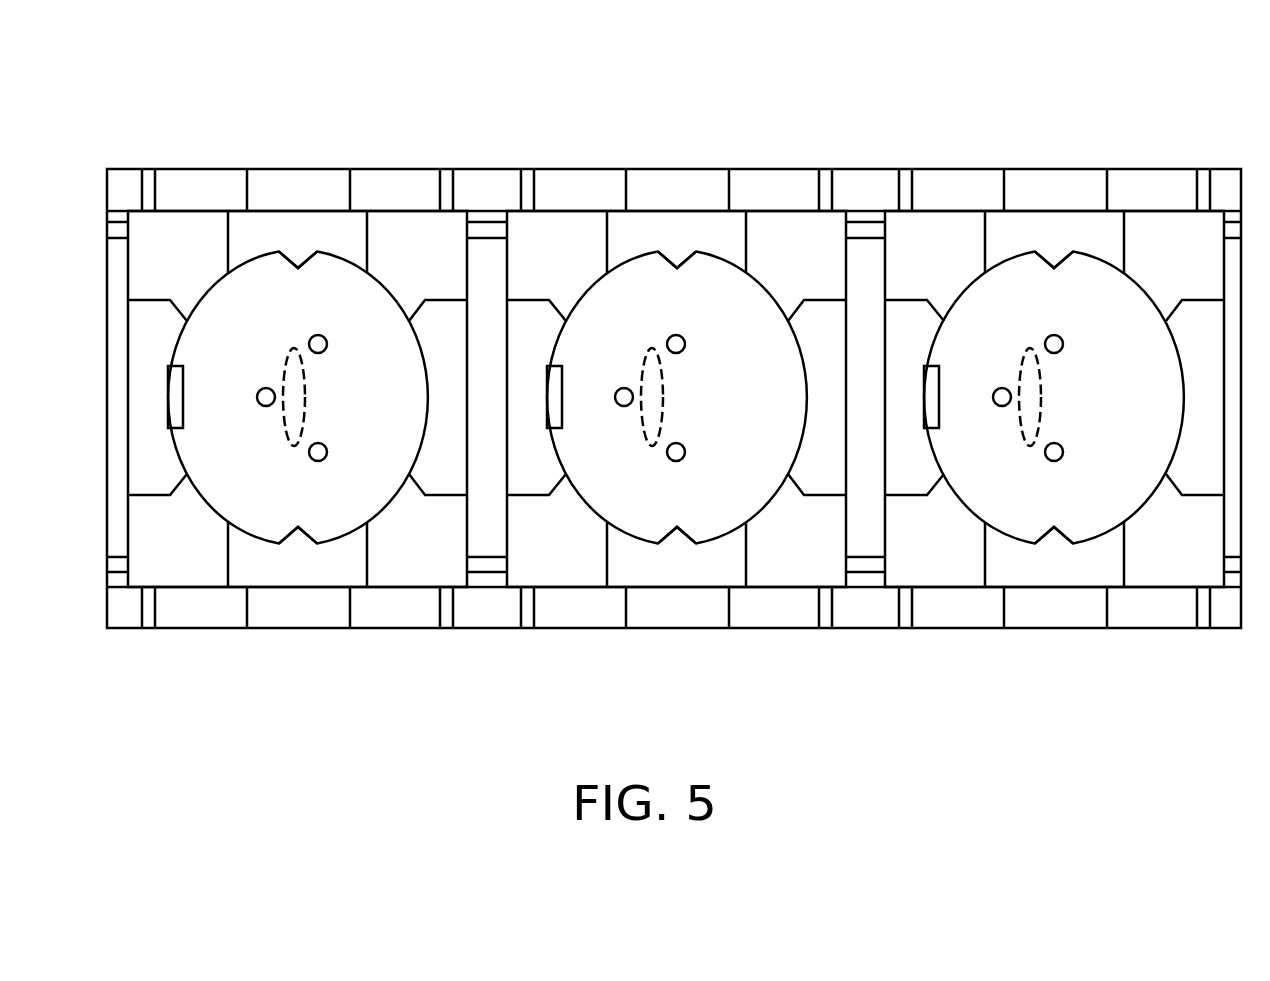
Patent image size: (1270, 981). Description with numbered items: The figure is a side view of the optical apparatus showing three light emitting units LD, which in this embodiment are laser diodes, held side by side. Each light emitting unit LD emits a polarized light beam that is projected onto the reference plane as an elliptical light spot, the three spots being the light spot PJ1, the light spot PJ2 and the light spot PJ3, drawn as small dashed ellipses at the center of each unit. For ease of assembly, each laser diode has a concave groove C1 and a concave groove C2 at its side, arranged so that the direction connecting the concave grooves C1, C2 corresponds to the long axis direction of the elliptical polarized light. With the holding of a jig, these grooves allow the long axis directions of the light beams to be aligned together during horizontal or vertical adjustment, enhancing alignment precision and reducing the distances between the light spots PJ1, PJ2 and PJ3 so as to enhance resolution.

The light emitting unit LD is at (978, 273).
The concave groove C1 is at (301, 258).
The concave groove C2 is at (302, 534).
The light spot PJ1 is at (305, 392).
The light spot PJ2 is at (663, 392).
The light spot PJ3 is at (1041, 392).